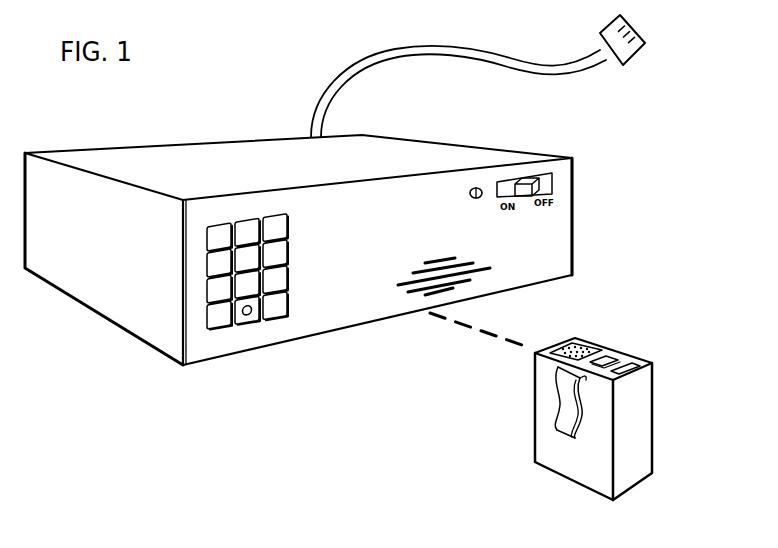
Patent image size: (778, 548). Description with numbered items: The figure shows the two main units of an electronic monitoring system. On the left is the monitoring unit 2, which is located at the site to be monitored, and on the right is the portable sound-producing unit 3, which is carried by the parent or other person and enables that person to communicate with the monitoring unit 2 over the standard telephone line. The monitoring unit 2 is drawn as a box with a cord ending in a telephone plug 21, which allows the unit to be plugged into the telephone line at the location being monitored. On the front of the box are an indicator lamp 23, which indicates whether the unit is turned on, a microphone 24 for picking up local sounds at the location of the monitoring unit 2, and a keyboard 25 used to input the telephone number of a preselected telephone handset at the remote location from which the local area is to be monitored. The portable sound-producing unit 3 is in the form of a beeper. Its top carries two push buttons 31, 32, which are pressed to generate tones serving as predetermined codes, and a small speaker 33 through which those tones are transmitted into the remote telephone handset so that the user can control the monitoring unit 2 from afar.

The monitoring unit 2 is at (207, 135).
The telephone plug 21 is at (600, 35).
The indicator lamp 23 is at (473, 187).
The microphone 24 is at (437, 258).
The keyboard 25 is at (292, 257).
The portable sound-producing unit 3 is at (532, 418).
The push button 31 is at (637, 366).
The push button 32 is at (607, 357).
The speaker 33 is at (568, 347).